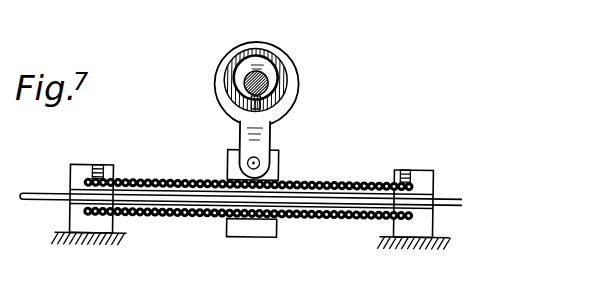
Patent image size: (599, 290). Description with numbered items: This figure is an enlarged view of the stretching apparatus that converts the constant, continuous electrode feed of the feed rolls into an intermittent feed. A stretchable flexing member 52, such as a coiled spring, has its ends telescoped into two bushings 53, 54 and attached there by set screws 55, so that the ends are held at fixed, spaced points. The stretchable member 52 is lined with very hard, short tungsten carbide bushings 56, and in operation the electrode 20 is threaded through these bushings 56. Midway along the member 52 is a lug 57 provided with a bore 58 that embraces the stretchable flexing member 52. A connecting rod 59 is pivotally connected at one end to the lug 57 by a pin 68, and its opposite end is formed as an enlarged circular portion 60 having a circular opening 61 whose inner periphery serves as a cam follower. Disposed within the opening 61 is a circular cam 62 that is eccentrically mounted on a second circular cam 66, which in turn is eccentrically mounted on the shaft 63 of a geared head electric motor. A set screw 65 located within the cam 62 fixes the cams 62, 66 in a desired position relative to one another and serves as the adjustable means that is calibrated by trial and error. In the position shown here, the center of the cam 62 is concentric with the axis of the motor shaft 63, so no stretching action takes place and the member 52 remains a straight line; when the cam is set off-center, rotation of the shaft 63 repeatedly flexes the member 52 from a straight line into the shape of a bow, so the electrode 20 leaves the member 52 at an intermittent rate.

The electrode 20 is at (462, 204).
The stretchable flexing member 52 is at (181, 222).
The bushing 53 is at (85, 247).
The bushing 54 is at (414, 233).
The set screw 55 is at (403, 169).
The bushings 56 is at (358, 178).
The lug 57 is at (258, 238).
The bore 58 is at (243, 222).
The connecting rod 59 is at (262, 135).
The enlarged circular portion 60 is at (216, 70).
The circular opening 61 is at (284, 97).
The circular cam 62 is at (262, 72).
The shaft 63 is at (273, 80).
The set screw 65 is at (230, 107).
The second circular cam 66 is at (250, 62).
The pin 68 is at (249, 159).